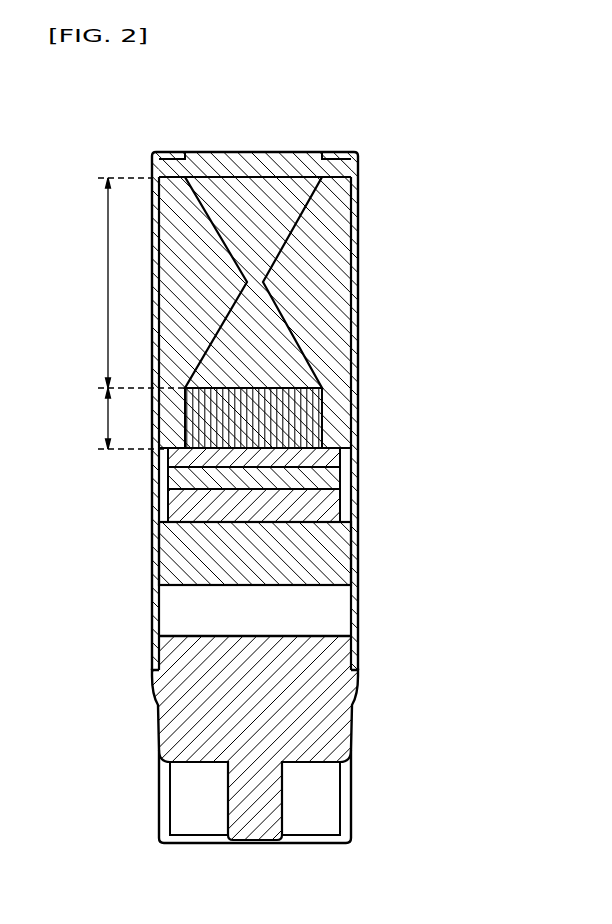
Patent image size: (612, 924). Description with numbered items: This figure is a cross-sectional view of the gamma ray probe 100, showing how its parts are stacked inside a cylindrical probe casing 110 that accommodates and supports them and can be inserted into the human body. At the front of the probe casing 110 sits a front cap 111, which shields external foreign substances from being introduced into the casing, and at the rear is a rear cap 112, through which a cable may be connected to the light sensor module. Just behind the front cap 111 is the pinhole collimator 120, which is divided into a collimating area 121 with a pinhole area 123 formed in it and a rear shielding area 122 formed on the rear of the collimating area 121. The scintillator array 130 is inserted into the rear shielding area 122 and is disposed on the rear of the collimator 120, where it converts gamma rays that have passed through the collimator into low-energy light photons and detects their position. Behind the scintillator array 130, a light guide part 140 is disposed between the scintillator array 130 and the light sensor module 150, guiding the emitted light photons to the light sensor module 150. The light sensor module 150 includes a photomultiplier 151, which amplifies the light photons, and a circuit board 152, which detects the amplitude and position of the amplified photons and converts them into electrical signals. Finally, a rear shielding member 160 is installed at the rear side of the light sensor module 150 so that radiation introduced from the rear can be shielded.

The gamma ray probe 100 is at (471, 88).
The probe casing 110 is at (358, 343).
The front cap 111 is at (252, 157).
The rear cap 112 is at (320, 739).
The collimator 120 is at (330, 279).
The collimating area 121 is at (121, 283).
The rear shielding area 122 is at (113, 418).
The pinhole area 123 is at (285, 216).
The scintillator array 130 is at (283, 415).
The light guide part 140 is at (340, 457).
The light sensor module 150 is at (465, 490).
The photomultiplier 151 is at (340, 480).
The circuit board 152 is at (340, 513).
The rear shielding member 160 is at (170, 554).